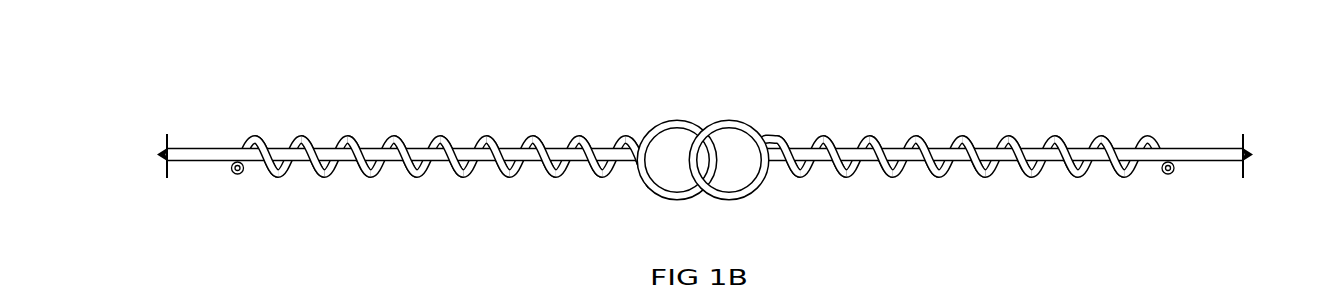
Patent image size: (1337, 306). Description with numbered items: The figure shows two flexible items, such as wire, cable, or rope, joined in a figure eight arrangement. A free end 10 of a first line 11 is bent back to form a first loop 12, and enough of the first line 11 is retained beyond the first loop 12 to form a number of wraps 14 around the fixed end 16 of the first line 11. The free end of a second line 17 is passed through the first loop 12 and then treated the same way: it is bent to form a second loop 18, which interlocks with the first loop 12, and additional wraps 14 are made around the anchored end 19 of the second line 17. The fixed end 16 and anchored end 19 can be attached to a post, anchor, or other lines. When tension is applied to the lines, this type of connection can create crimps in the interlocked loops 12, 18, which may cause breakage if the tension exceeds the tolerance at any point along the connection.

The free end 10 is at (234, 174).
The first line 11 is at (246, 77).
The first loop 12 is at (663, 203).
The wraps 14 is at (702, 165).
The fixed end 16 is at (222, 150).
The second line 17 is at (1164, 71).
The second loop 18 is at (755, 189).
The anchored end 19 is at (1182, 148).